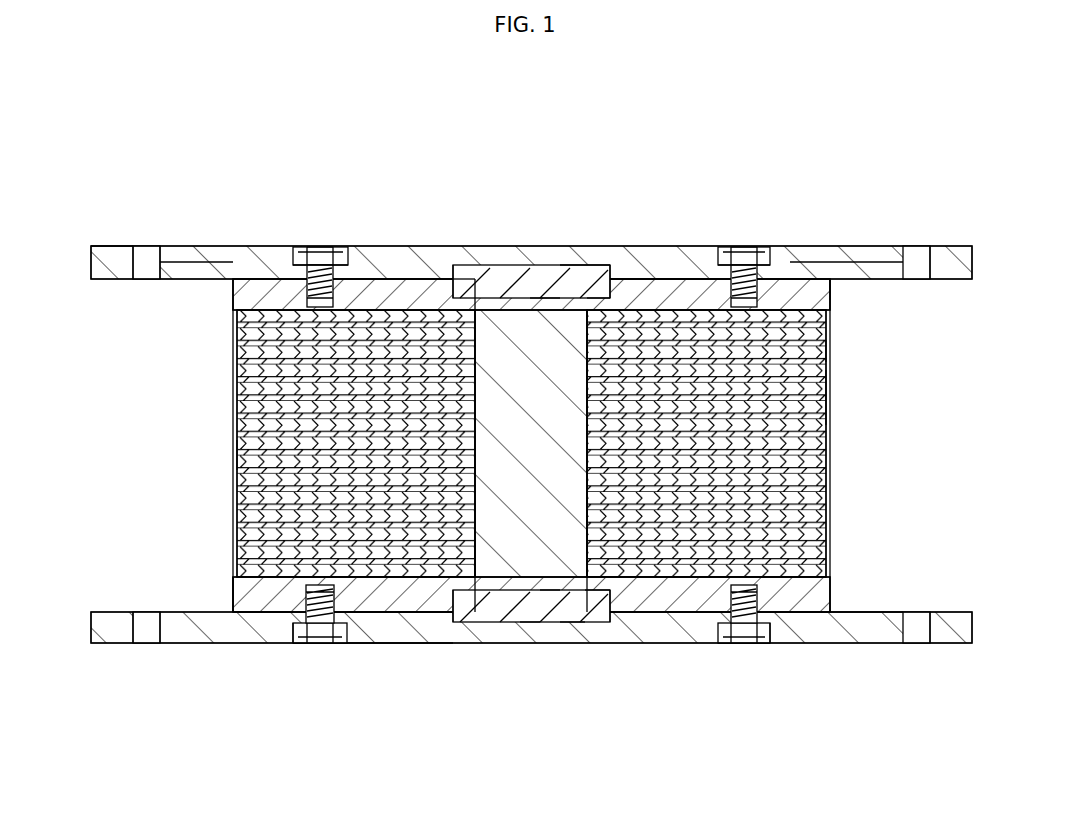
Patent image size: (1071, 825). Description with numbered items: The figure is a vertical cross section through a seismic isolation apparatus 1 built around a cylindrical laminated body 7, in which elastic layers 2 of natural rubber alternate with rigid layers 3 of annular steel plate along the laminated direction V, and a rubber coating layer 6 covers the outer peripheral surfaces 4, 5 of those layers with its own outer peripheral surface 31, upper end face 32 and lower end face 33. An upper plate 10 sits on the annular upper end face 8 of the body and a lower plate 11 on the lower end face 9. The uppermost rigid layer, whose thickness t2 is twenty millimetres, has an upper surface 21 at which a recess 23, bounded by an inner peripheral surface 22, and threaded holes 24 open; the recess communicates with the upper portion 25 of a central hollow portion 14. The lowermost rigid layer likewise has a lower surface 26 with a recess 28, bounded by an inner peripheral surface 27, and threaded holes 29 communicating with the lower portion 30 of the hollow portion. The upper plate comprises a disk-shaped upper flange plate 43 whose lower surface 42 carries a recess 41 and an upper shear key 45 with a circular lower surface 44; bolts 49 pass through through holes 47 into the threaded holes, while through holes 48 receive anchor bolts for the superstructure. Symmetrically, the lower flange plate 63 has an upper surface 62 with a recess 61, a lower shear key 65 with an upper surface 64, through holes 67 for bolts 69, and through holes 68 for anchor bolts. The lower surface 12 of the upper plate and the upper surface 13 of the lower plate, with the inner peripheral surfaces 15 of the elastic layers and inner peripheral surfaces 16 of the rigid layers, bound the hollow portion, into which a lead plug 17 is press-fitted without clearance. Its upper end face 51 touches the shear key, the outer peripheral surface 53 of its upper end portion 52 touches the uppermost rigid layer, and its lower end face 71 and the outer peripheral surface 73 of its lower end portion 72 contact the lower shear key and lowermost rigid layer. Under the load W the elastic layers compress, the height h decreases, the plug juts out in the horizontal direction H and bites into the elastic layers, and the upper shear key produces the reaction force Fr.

The seismic isolation apparatus 1 is at (104, 234).
The elastic layers 2 is at (238, 330).
The rigid layers 3 is at (245, 293).
The outer peripheral surfaces 4 is at (826, 381).
The outer peripheral surfaces 5 is at (236, 577).
The coating layer 6 is at (826, 352).
The laminated body 7 is at (236, 455).
The upper end face 8 is at (702, 290).
The lower end face 9 is at (410, 641).
The upper plate 10 is at (878, 246).
The lower plate 11 is at (102, 645).
The lower surface 12 is at (177, 292).
The upper surface 13 is at (880, 614).
The hollow portion 14 is at (590, 300).
The inner peripheral surfaces 15 is at (584, 560).
The inner peripheral surfaces 16 is at (470, 283).
The lead plug 17 is at (522, 560).
The upper surface 21 is at (806, 262).
The inner peripheral surface 22 is at (456, 280).
The recess 23 is at (606, 300).
The threaded holes 24 is at (284, 263).
The upper portion 25 is at (553, 298).
The lower surface 26 is at (268, 614).
The inner peripheral surface 27 is at (600, 602).
The recess 28 is at (458, 600).
The threaded holes 29 is at (316, 645).
The lower portion 30 is at (545, 622).
The outer peripheral surface 31 is at (826, 410).
The upper end face 32 is at (831, 290).
The lower end face 33 is at (828, 614).
The recess 41 is at (520, 300).
The lower surface 42 is at (848, 262).
The upper flange plate 43 is at (221, 262).
The lower surface 44 is at (565, 298).
The upper shear key 45 is at (622, 280).
The through holes 47 is at (306, 250).
The through holes 48 is at (143, 262).
The bolts 49 is at (335, 250).
The upper end face 51 is at (535, 300).
The upper end portion 52 is at (490, 280).
The outer peripheral surface 53 is at (652, 280).
The recess 61 is at (500, 624).
The upper surface 62 is at (381, 625).
The lower flange plate 63 is at (168, 632).
The upper surface 64 is at (556, 622).
The lower shear key 65 is at (567, 622).
The through holes 67 is at (331, 640).
The through holes 68 is at (147, 625).
The bolts 69 is at (320, 646).
The lower end face 71 is at (528, 624).
The lower end portion 72 is at (485, 622).
The outer peripheral surface 73 is at (614, 602).
The reaction force Fr is at (528, 302).
The horizontal direction H is at (305, 206).
The laminated direction V is at (108, 408).
The load W is at (531, 222).
The height h is at (952, 643).
The thickness t2 is at (195, 560).